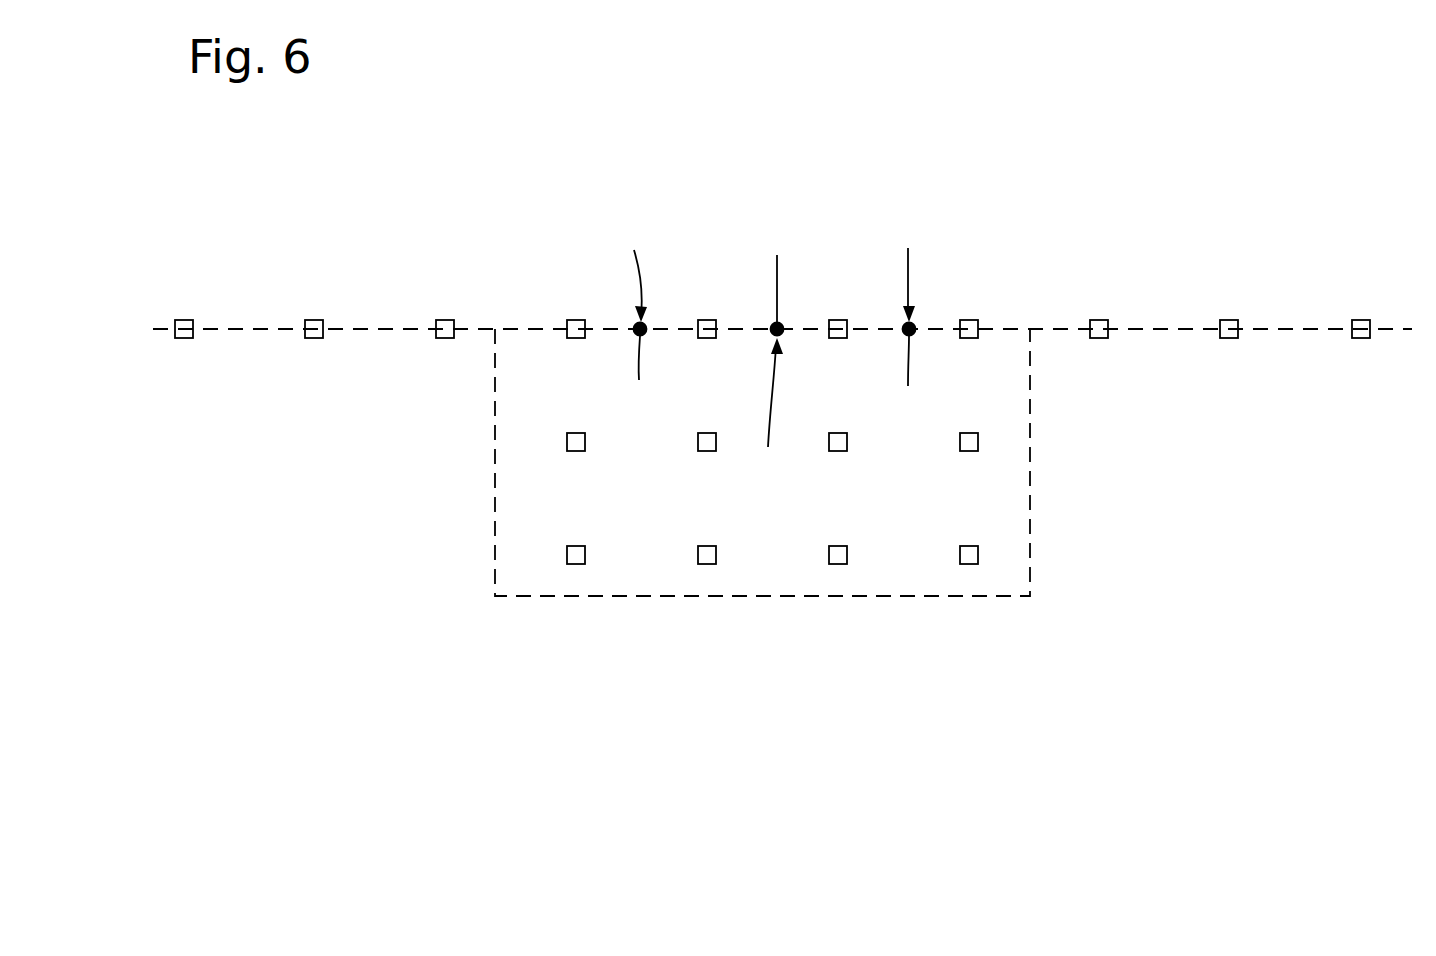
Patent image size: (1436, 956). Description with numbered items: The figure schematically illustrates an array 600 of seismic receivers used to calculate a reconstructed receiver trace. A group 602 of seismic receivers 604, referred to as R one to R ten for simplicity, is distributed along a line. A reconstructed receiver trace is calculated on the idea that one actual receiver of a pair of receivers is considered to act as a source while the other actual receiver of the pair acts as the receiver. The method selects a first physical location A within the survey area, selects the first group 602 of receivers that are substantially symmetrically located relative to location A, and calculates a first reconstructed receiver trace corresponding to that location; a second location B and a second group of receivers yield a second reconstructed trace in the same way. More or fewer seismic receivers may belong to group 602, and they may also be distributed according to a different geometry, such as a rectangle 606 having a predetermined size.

The array of seismic receivers 600 is at (843, 157).
The group of seismic receivers 602 is at (1178, 250).
The seismic receiver 604 is at (1361, 320).
The rectangle 606 is at (1030, 553).